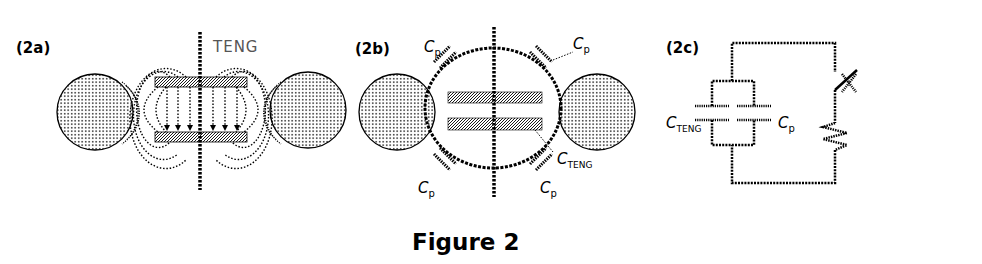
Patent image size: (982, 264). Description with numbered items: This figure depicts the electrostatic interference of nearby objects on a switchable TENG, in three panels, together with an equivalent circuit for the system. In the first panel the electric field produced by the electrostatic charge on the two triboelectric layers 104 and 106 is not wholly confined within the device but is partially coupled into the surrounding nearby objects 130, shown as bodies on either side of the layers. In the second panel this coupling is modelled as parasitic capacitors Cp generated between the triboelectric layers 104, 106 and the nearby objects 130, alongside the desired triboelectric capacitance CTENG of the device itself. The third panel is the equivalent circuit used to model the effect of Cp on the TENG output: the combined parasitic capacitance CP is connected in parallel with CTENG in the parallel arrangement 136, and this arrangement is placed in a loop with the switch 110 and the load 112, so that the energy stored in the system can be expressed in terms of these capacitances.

The triboelectric layer surface 104 is at (190, 77).
The triboelectric layer surface 106 is at (185, 143).
The nearby objects 130 is at (346, 111).
The switch 110 is at (862, 81).
The load 112 is at (851, 136).
The capacitor network 136 is at (728, 163).